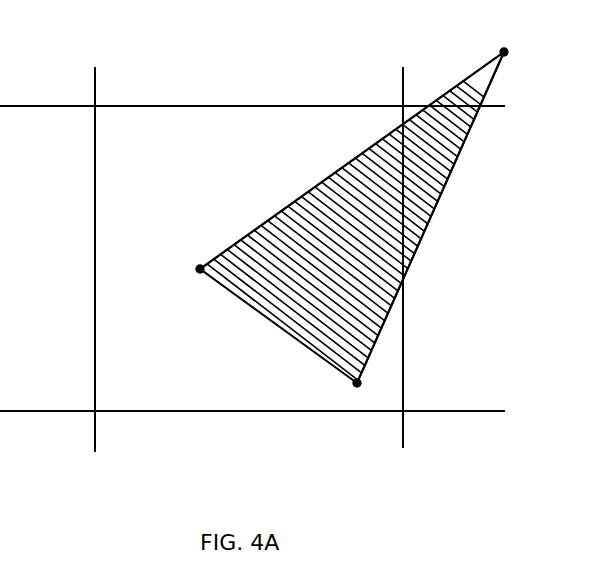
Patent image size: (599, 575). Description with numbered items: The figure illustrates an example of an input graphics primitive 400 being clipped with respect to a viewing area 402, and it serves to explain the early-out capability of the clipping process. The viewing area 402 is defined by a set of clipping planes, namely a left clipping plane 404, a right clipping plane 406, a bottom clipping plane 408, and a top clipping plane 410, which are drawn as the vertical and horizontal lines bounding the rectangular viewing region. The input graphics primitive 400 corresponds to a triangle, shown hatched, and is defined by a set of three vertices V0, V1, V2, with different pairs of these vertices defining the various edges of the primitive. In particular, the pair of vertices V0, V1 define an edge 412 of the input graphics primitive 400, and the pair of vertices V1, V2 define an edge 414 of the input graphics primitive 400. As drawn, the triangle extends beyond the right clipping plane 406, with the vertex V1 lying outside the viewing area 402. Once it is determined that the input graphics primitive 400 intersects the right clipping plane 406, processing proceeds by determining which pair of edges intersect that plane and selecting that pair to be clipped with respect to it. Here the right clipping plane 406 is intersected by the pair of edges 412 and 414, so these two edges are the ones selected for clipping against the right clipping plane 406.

The input graphics primitive 400 is at (375, 337).
The viewing area 402 is at (258, 127).
The left clipping plane 404 is at (95, 340).
The right clipping plane 406 is at (405, 327).
The bottom clipping plane 408 is at (138, 413).
The top clipping plane 410 is at (128, 105).
The edge 412 is at (430, 221).
The edge 414 is at (370, 147).
The vertex V0 is at (370, 393).
The vertex V1 is at (514, 51).
The vertex V2 is at (184, 270).